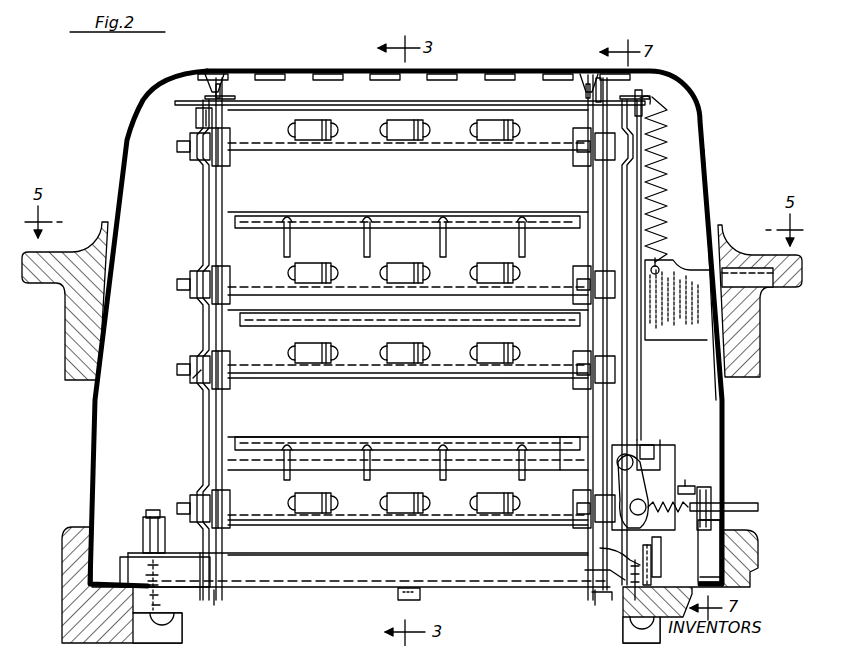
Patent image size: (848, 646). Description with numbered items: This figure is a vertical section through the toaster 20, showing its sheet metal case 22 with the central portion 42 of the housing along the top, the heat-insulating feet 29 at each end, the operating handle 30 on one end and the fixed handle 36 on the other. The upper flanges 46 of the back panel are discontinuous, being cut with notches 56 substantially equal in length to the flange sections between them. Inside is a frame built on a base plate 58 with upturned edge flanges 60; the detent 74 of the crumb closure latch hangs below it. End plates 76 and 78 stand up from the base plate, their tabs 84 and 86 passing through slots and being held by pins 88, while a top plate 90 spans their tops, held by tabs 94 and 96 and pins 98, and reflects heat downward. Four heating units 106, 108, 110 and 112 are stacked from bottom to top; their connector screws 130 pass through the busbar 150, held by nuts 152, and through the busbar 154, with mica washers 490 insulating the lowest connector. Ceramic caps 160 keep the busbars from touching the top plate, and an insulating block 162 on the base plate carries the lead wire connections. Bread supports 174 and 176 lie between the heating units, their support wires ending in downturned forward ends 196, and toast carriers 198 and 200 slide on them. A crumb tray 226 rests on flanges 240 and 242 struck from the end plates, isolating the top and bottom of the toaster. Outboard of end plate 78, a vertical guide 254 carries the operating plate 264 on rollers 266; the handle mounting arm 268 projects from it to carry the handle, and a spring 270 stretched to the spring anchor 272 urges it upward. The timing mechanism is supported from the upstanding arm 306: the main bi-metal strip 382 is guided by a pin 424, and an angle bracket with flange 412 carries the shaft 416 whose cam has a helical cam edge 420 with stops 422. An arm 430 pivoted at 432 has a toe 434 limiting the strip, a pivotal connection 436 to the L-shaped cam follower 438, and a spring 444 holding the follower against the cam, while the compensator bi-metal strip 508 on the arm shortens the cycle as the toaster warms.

The toaster 20 is at (706, 149).
The sheet metal case 22 is at (520, 66).
The feet 29 is at (72, 535).
The operating handle 30 is at (748, 222).
The fixed handle 36 is at (87, 250).
The central portion of the toaster case 42 is at (322, 73).
The top and edge flanges of back panel 46 is at (333, 78).
The notches 56 is at (270, 73).
The base plate 58 is at (328, 590).
The upturned edge flanges 60 is at (506, 576).
The detent 74 is at (420, 594).
The end plate 76 is at (214, 218).
The end plate 78 is at (558, 140).
The tabs 84 is at (222, 598).
The tabs 86 is at (590, 594).
The pins 88 is at (214, 604).
The top plate 90 is at (452, 105).
The tabs 94 is at (232, 70).
The tabs 96 is at (586, 72).
The pins 98 is at (205, 74).
The heating unit 106 is at (414, 522).
The heating unit 108 is at (437, 364).
The heating unit 110 is at (445, 286).
The heating unit 112 is at (352, 140).
The connector screw 130 is at (178, 360).
The busbar 150 is at (202, 440).
The nuts 152 is at (196, 384).
The busbar 154 is at (620, 402).
The ceramic caps 160 is at (196, 117).
The insulating block 162 is at (150, 540).
The bread support 174 is at (324, 440).
The bread support 176 is at (487, 222).
The downturned forward ends 196 is at (440, 476).
The toast carrier 198 is at (418, 440).
The toast carrier 200 is at (417, 228).
The crumb tray 226 is at (348, 222).
The flange 240 is at (232, 328).
The flange 242 is at (512, 372).
The vertical guide 254 is at (672, 235).
The operating plate 264 is at (642, 205).
The rollers 266 is at (630, 140).
The handle mounting arm 268 is at (665, 340).
The spring 270 is at (662, 150).
The spring anchor 272 is at (640, 100).
The upstanding arm 306 is at (732, 578).
The bi-metal strip 382 is at (612, 556).
The flange of angle bracket 412 is at (702, 432).
The shaft 416 is at (712, 503).
The helical cam edge 420 is at (740, 530).
The stops 422 is at (692, 500).
The pin 424 is at (600, 572).
The arm 430 is at (708, 447).
The pivot 432 is at (650, 452).
The toe 434 is at (634, 596).
The pivotal connection 436 is at (700, 462).
The L-shaped cam follower 438 is at (702, 480).
The spring 444 is at (662, 540).
The mica spacers or washers 490 is at (560, 437).
The bi-metal strip 508 is at (666, 575).